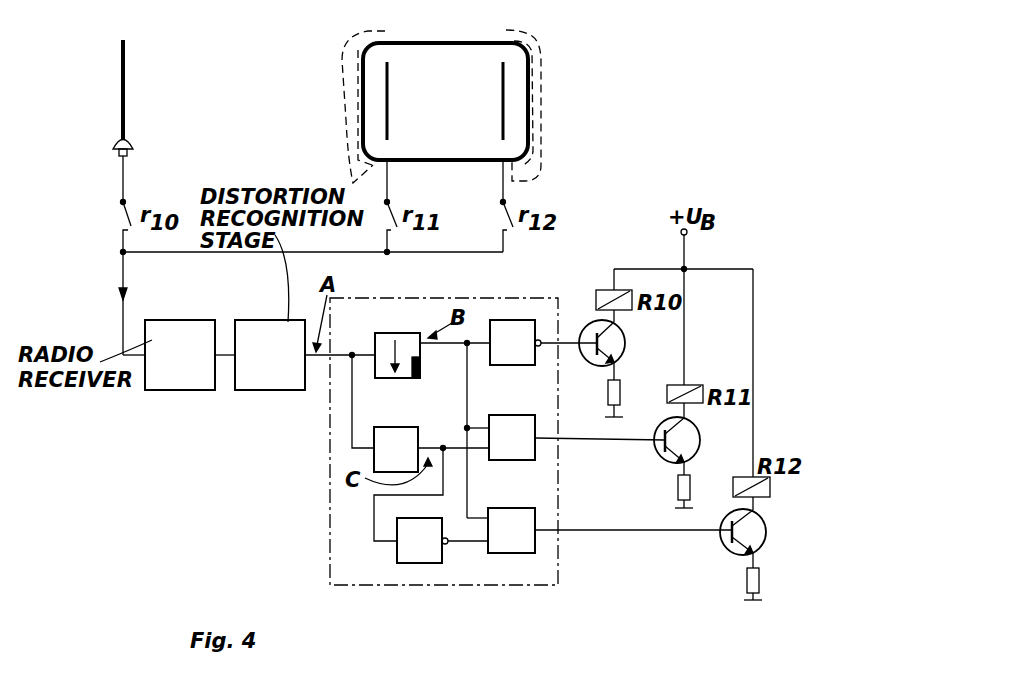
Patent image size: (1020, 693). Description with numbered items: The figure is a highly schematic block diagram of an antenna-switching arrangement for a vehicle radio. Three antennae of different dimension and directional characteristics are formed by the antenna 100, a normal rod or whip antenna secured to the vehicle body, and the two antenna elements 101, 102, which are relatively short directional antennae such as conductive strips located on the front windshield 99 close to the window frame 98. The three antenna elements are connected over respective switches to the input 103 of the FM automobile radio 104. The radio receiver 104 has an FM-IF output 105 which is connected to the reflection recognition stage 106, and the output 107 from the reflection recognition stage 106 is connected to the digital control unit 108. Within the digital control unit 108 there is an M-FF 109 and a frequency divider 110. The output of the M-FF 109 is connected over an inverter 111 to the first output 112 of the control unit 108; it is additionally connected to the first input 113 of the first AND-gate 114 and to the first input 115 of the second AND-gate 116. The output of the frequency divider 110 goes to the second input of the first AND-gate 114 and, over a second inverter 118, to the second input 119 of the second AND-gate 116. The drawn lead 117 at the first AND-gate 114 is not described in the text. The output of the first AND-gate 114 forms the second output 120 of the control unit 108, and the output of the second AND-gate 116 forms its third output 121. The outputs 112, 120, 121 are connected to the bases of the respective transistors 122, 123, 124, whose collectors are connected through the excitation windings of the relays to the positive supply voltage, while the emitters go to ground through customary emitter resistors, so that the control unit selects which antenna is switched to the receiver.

The window frame 98 is at (360, 128).
The front windshield 99 is at (455, 42).
The antenna 100 is at (123, 88).
The antenna element 101 is at (388, 87).
The antenna element 102 is at (500, 127).
The input 103 is at (133, 357).
The FM automobile radio 104 is at (195, 320).
The FM-IF output 105 is at (220, 357).
The reflection recognition stage 106 is at (288, 322).
The output 107 is at (310, 357).
The digital control unit 108 is at (330, 535).
The M-FF 109 is at (388, 333).
The frequency divider 110 is at (396, 427).
The inverter 111 is at (508, 320).
The first output 112 is at (563, 340).
The first input 113 is at (489, 430).
The first AND-gate 114 is at (553, 458).
The first input 115 is at (485, 518).
The second AND-gate 116 is at (518, 553).
The input line of first AND gate 117 is at (482, 457).
The second inverter 118 is at (397, 556).
The second input 119 is at (483, 543).
The second output 120 is at (560, 440).
The third output 121 is at (563, 532).
The transistor 122 is at (627, 345).
The transistor 123 is at (658, 460).
The transistor 124 is at (732, 555).